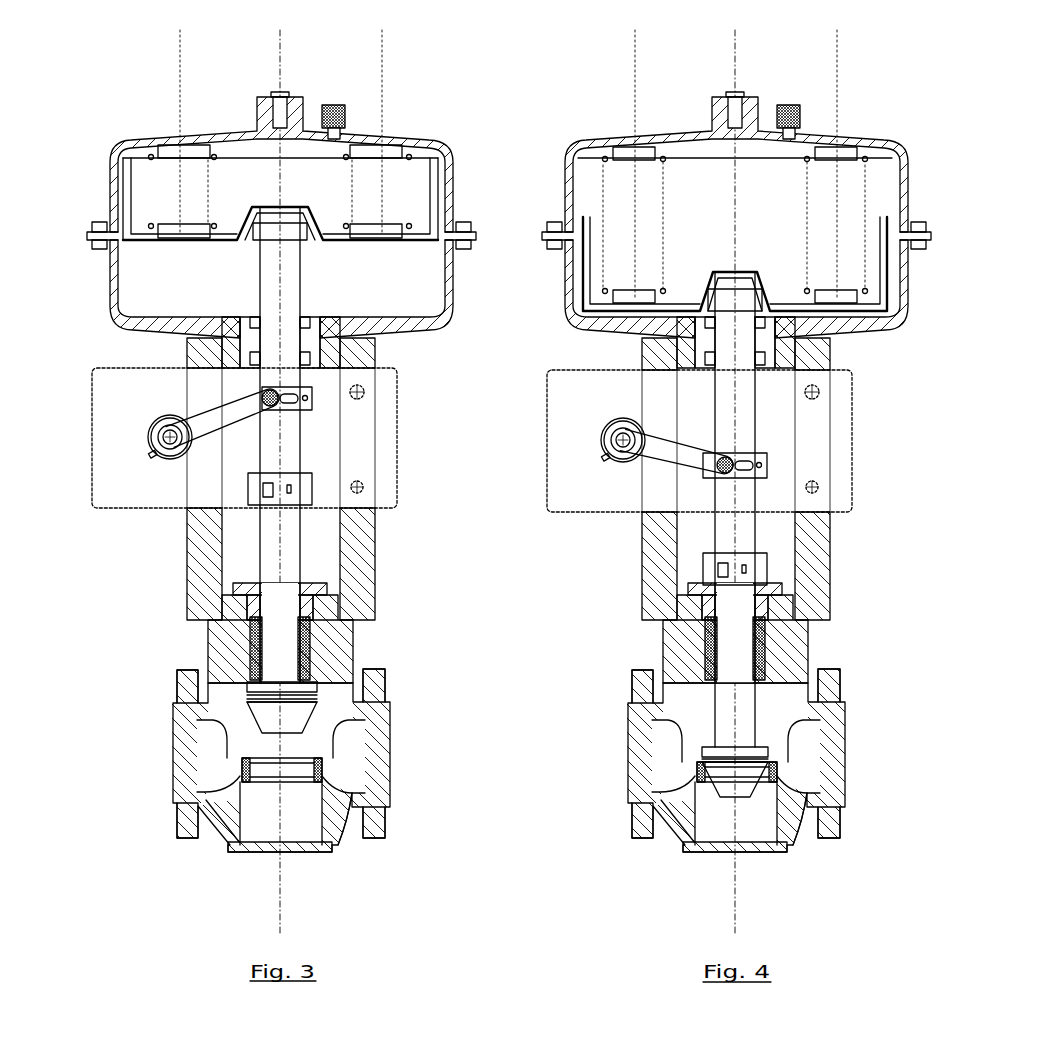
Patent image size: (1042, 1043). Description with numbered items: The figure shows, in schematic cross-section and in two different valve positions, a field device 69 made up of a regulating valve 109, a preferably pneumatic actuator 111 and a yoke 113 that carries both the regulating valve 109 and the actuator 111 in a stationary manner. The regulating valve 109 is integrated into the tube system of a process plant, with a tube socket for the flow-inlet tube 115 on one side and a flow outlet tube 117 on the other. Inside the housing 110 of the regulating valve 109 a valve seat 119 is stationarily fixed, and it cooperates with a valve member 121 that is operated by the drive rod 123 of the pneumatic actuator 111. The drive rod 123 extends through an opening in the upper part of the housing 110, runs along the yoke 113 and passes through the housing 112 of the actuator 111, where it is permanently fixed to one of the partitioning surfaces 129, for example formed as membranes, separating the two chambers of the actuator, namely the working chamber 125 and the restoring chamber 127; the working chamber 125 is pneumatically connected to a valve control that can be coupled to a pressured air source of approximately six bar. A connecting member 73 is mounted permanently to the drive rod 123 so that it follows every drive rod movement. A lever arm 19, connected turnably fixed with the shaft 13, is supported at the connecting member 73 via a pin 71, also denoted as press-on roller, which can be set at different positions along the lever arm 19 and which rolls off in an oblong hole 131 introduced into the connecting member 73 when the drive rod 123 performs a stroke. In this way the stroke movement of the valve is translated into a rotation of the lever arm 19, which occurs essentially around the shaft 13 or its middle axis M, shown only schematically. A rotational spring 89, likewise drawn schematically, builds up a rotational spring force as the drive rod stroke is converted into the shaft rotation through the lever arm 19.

In FIG. 3, the field device 69 is at (124, 122).
In FIG. 4, the field device 69 is at (579, 122).
In FIG. 3, the pneumatic actuator 111 is at (426, 129).
In FIG. 4, the pneumatic actuator 111 is at (881, 129).
In FIG. 3, the housing of the actuator 112 is at (453, 167).
In FIG. 4, the housing of the actuator 112 is at (902, 170).
In FIG. 3, the working chamber 125 is at (428, 292).
In FIG. 4, the working chamber 125 is at (580, 295).
In FIG. 3, the restoring chamber 127 is at (392, 212).
In FIG. 4, the restoring chamber 127 is at (620, 212).
In FIG. 3, the partitioning surface 129 is at (338, 242).
In FIG. 4, the partitioning surface 129 is at (600, 307).
In FIG. 3, the oblong hole 131 is at (410, 190).
In FIG. 4, the oblong hole 131 is at (525, 185).
In FIG. 3, the yoke 113 is at (360, 567).
In FIG. 4, the yoke 113 is at (815, 570).
In FIG. 3, the lever arm 19 is at (213, 407).
In FIG. 4, the lever arm 19 is at (655, 410).
In FIG. 3, the middle axis M is at (147, 453).
In FIG. 4, the middle axis M is at (600, 453).
In FIG. 3, the shaft 13 is at (157, 428).
In FIG. 4, the shaft 13 is at (610, 428).
In FIG. 3, the rotational spring 89 is at (170, 458).
In FIG. 4, the rotational spring 89 is at (625, 462).
In FIG. 3, the pin 71 is at (262, 396).
In FIG. 4, the pin 71 is at (727, 457).
In FIG. 3, the connecting member 73 is at (312, 391).
In FIG. 4, the connecting member 73 is at (767, 457).
In FIG. 3, the regulating valve 109 is at (209, 849).
In FIG. 4, the regulating valve 109 is at (664, 852).
In FIG. 3, the housing of the regulating valve 110 is at (330, 810).
In FIG. 4, the housing of the regulating valve 110 is at (795, 800).
In FIG. 3, the tube socket for the flow-inlet tube 115 is at (185, 777).
In FIG. 4, the tube socket for the flow-inlet tube 115 is at (635, 778).
In FIG. 3, the flow outlet tube 117 is at (388, 797).
In FIG. 4, the flow outlet tube 117 is at (837, 802).
In FIG. 3, the drive rod 123 is at (272, 652).
In FIG. 4, the drive rod 123 is at (745, 722).
In FIG. 3, the valve member 121 is at (268, 717).
In FIG. 4, the valve member 121 is at (725, 778).
In FIG. 3, the valve seat 119 is at (305, 785).
In FIG. 4, the valve seat 119 is at (762, 785).